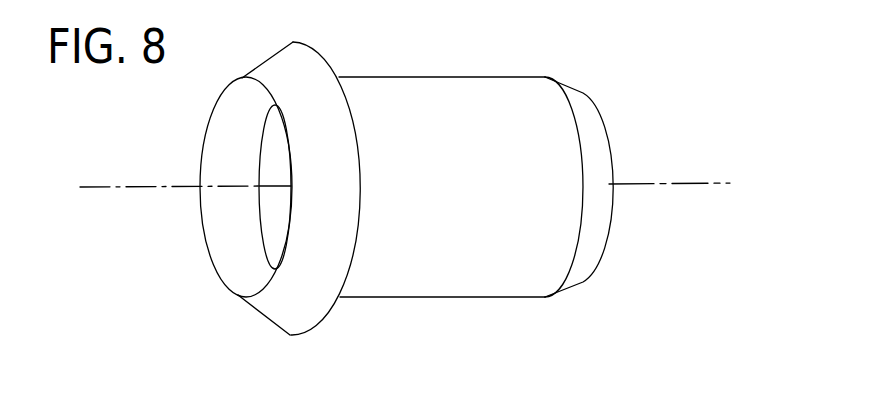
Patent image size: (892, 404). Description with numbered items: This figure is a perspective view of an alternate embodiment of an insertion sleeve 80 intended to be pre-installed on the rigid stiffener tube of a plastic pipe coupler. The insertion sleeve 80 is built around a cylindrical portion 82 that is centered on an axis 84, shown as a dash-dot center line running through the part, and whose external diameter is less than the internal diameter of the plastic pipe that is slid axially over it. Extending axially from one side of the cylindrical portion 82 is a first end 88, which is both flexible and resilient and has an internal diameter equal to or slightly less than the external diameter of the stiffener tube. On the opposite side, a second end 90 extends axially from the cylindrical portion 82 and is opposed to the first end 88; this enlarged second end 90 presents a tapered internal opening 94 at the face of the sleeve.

The insertion sleeve 80 is at (663, 106).
The cylindrical portion 82 is at (413, 80).
The axis 84 is at (100, 190).
The first end 88 is at (580, 90).
The second end 90 is at (283, 68).
The tapered internal opening 94 is at (233, 136).